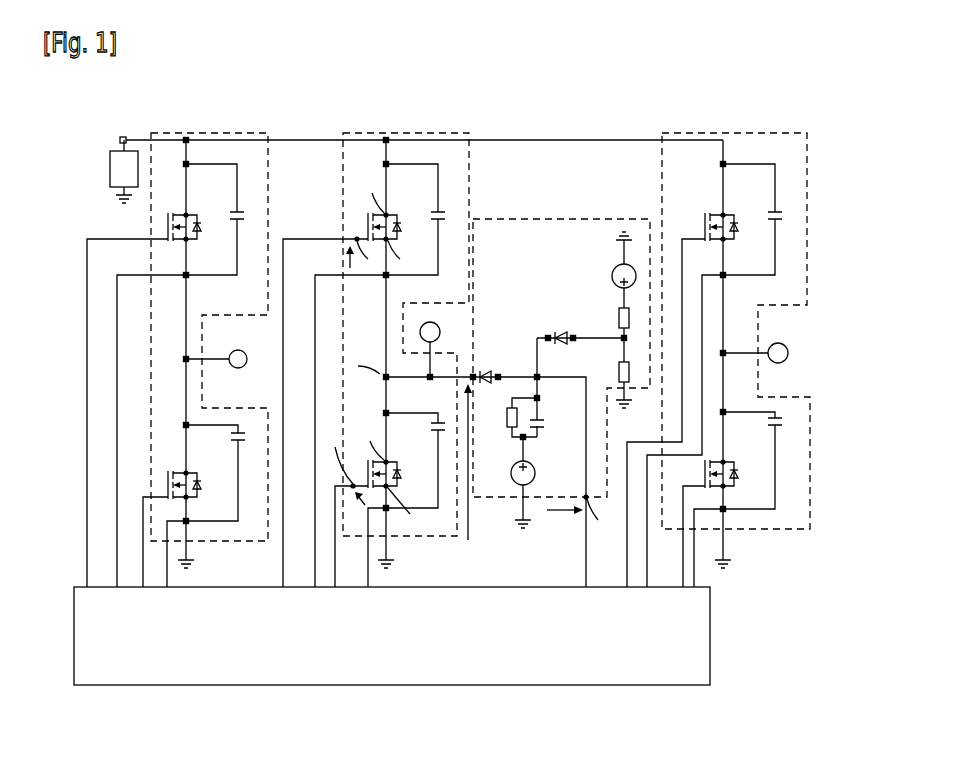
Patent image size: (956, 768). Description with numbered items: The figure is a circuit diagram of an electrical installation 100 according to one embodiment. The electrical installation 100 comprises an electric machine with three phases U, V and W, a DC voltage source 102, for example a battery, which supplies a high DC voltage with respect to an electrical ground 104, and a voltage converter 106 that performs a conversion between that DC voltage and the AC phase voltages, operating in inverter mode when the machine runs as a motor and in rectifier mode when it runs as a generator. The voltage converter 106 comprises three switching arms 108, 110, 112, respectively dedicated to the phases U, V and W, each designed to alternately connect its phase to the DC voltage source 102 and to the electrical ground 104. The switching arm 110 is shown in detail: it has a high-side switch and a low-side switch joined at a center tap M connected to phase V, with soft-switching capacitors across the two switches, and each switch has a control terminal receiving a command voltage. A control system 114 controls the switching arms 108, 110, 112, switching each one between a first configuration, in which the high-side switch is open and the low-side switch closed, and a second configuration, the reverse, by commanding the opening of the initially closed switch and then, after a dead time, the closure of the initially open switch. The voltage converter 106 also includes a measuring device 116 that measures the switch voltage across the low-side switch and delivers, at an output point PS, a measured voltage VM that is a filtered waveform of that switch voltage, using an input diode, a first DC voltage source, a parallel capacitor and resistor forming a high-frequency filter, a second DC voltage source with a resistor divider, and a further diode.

The electrical installation 100 is at (845, 152).
The DC voltage source 102 is at (136, 181).
The electrical ground 104 is at (117, 204).
The voltage converter 106 is at (535, 705).
The switching arm 108 is at (217, 132).
The switching arm 110 is at (396, 132).
The switching arm 112 is at (721, 132).
The control system 114 is at (365, 650).
The measuring device 116 is at (550, 218).